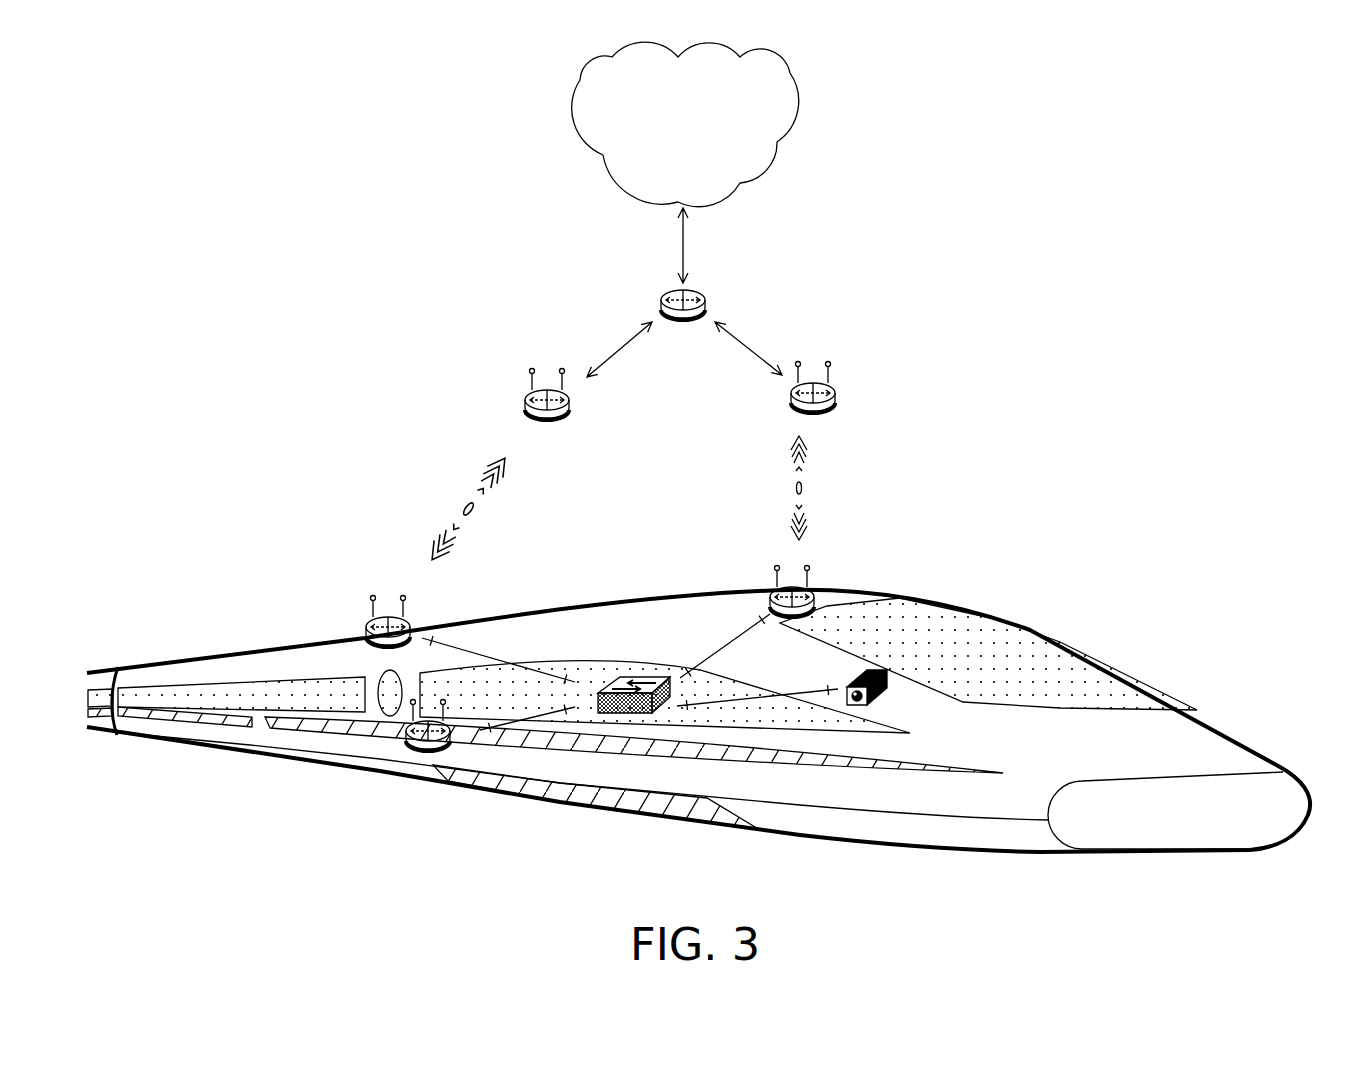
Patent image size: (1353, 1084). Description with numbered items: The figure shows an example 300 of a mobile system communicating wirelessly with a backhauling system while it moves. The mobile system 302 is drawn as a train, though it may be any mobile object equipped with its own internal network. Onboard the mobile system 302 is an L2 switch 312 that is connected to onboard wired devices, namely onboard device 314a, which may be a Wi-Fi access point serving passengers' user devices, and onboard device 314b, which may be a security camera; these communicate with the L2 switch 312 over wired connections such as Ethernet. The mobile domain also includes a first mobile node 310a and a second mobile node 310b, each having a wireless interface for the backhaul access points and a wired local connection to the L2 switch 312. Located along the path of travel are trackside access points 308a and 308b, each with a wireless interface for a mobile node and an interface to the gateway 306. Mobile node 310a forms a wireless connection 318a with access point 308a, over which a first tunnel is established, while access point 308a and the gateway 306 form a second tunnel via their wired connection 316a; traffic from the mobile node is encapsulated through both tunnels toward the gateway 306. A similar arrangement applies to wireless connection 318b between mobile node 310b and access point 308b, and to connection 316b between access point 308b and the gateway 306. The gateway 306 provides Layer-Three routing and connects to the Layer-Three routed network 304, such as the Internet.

The example of a mobile system communicating wirelessly 300 is at (1240, 109).
The mobile system 302 is at (1032, 630).
The L3-routed network 304 is at (706, 165).
The gateway 306 is at (701, 295).
The trackside access point 308a is at (835, 390).
The trackside access point 308b is at (525, 395).
The first mobile node 310a is at (812, 597).
The second mobile node 310b is at (367, 625).
The L2 switch 312 is at (640, 677).
The onboard device 314a is at (428, 745).
The onboard device 314b is at (878, 703).
The connection 316a is at (773, 332).
The connection 316b is at (596, 333).
The wireless connection 318a is at (854, 490).
The wireless connection 318b is at (478, 435).